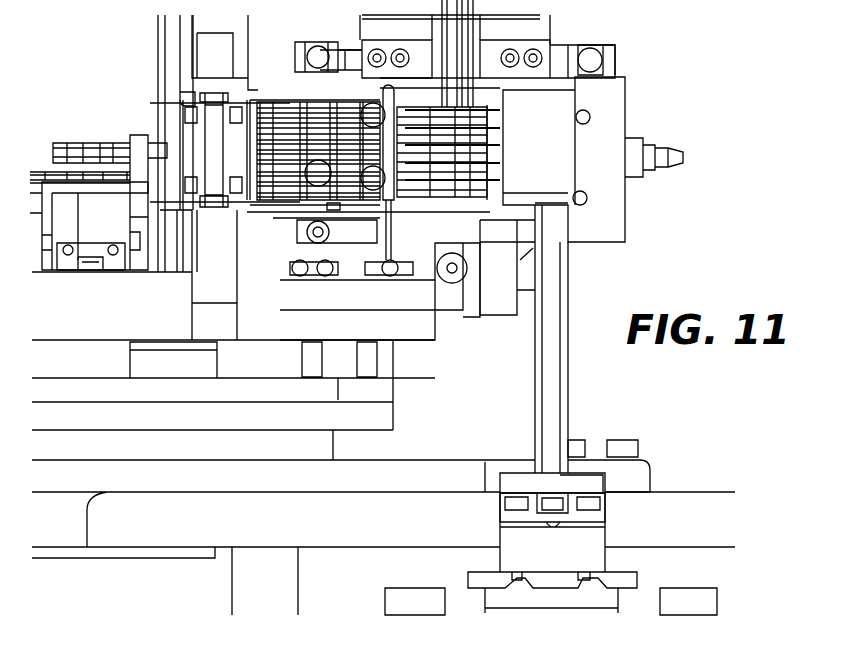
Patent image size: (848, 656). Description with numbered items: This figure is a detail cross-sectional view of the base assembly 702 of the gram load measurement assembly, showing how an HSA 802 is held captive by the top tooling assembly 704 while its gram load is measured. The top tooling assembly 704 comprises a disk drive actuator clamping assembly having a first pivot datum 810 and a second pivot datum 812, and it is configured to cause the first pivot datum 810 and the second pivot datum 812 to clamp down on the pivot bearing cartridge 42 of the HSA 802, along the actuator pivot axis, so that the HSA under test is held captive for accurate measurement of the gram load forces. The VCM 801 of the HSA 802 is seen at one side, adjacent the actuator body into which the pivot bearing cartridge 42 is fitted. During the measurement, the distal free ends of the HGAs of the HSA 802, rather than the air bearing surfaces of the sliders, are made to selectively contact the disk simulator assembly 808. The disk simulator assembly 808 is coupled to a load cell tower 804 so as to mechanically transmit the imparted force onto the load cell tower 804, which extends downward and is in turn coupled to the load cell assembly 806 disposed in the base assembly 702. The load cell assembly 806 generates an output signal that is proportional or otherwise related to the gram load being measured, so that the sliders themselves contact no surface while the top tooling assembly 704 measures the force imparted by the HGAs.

The pivot bearing cartridge 42 is at (218, 138).
The base assembly 702 is at (677, 485).
The top tooling assembly 704 is at (680, 76).
The VCM 801 is at (60, 143).
The HSA 802 is at (283, 103).
The load cell tower 804 is at (560, 382).
The load cell assembly 806 is at (597, 513).
The disk simulator assembly 808 is at (560, 165).
The first pivot datum 810 is at (215, 210).
The second pivot datum 812 is at (195, 92).